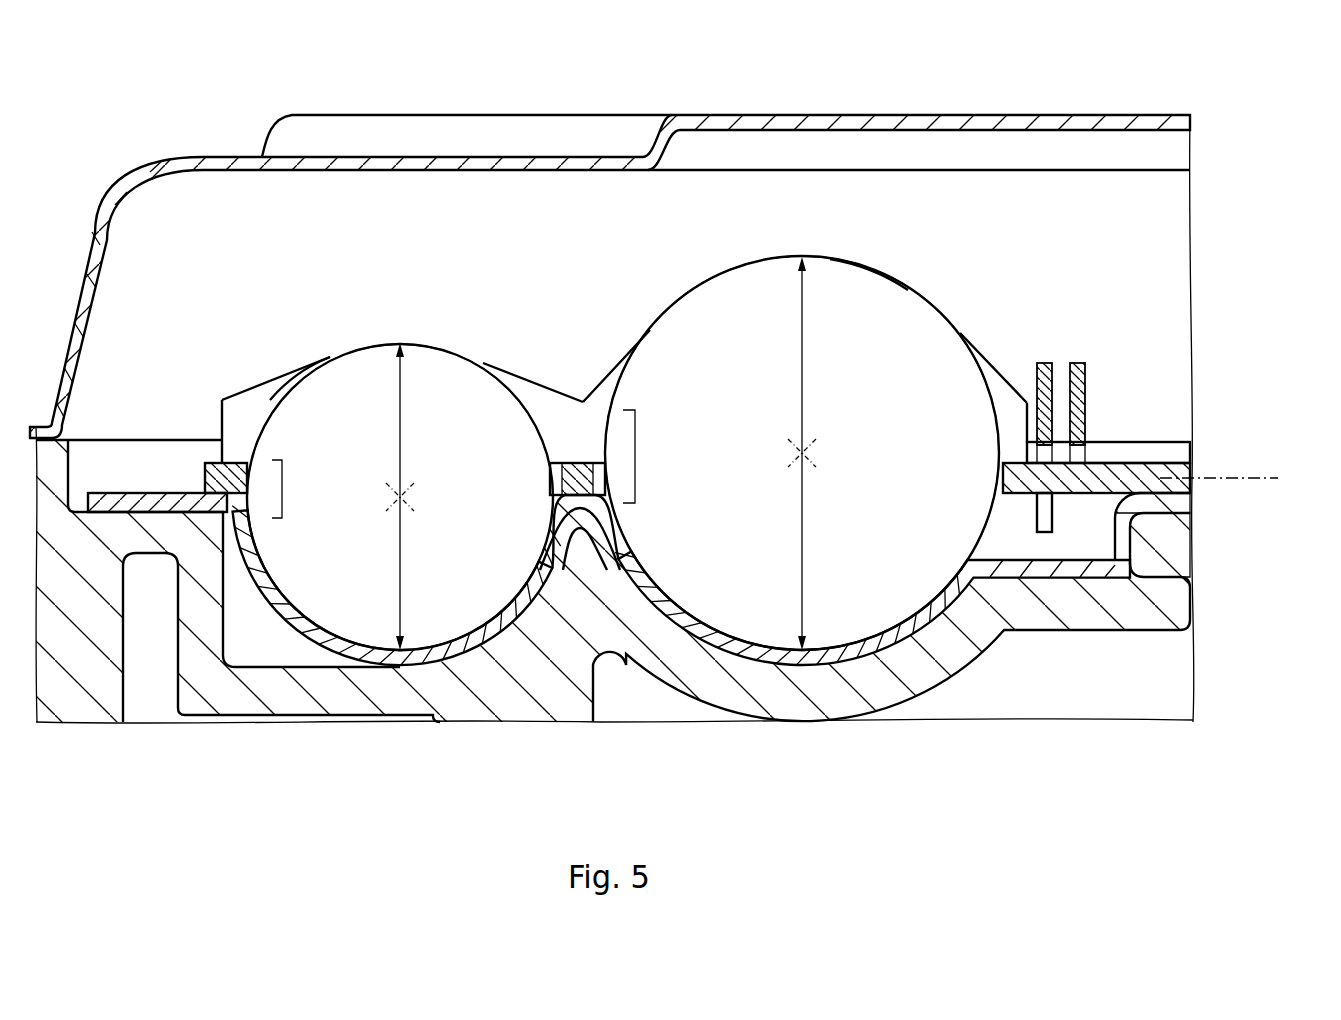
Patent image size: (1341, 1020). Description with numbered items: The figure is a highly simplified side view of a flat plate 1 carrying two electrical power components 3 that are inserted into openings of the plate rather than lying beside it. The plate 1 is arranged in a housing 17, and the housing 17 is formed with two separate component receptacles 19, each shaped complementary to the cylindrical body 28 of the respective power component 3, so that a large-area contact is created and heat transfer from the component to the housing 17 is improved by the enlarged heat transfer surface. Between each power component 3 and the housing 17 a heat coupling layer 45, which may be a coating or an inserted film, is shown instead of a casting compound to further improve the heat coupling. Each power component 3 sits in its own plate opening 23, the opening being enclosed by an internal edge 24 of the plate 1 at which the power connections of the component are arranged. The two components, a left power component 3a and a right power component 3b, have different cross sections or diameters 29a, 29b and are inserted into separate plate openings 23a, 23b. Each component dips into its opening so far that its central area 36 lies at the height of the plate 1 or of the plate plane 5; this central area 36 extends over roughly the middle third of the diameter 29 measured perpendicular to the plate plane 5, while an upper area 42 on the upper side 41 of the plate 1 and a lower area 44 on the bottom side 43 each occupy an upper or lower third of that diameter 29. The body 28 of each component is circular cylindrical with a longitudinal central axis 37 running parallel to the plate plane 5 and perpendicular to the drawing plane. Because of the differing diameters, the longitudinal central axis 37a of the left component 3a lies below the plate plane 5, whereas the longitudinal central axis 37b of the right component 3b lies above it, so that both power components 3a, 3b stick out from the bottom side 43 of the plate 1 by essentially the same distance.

The plate 1 is at (1185, 435).
The power component 3 is at (596, 419).
The power component 3a is at (265, 393).
The power component 3b is at (916, 281).
The plate plane 5 is at (1278, 478).
The housing 17 is at (231, 148).
The component receptacle 19 is at (385, 680).
The plate opening 23 is at (594, 410).
The plate opening 23a is at (221, 432).
The plate opening 23b is at (1003, 460).
The internal edge 24 is at (584, 460).
The body 28 is at (289, 393).
The diameter 29 is at (648, 453).
The diameter 29a is at (401, 540).
The diameter 29b is at (804, 517).
The central area 36 is at (283, 488).
The longitudinal central axis 37 is at (661, 475).
The longitudinal central axis 37a is at (402, 496).
The longitudinal central axis 37b is at (804, 453).
The upper side 41 is at (1100, 460).
The upper area 42 is at (360, 404).
The bottom side 43 is at (1100, 498).
The lower area 44 is at (360, 606).
The heat coupling layer 45 is at (440, 657).